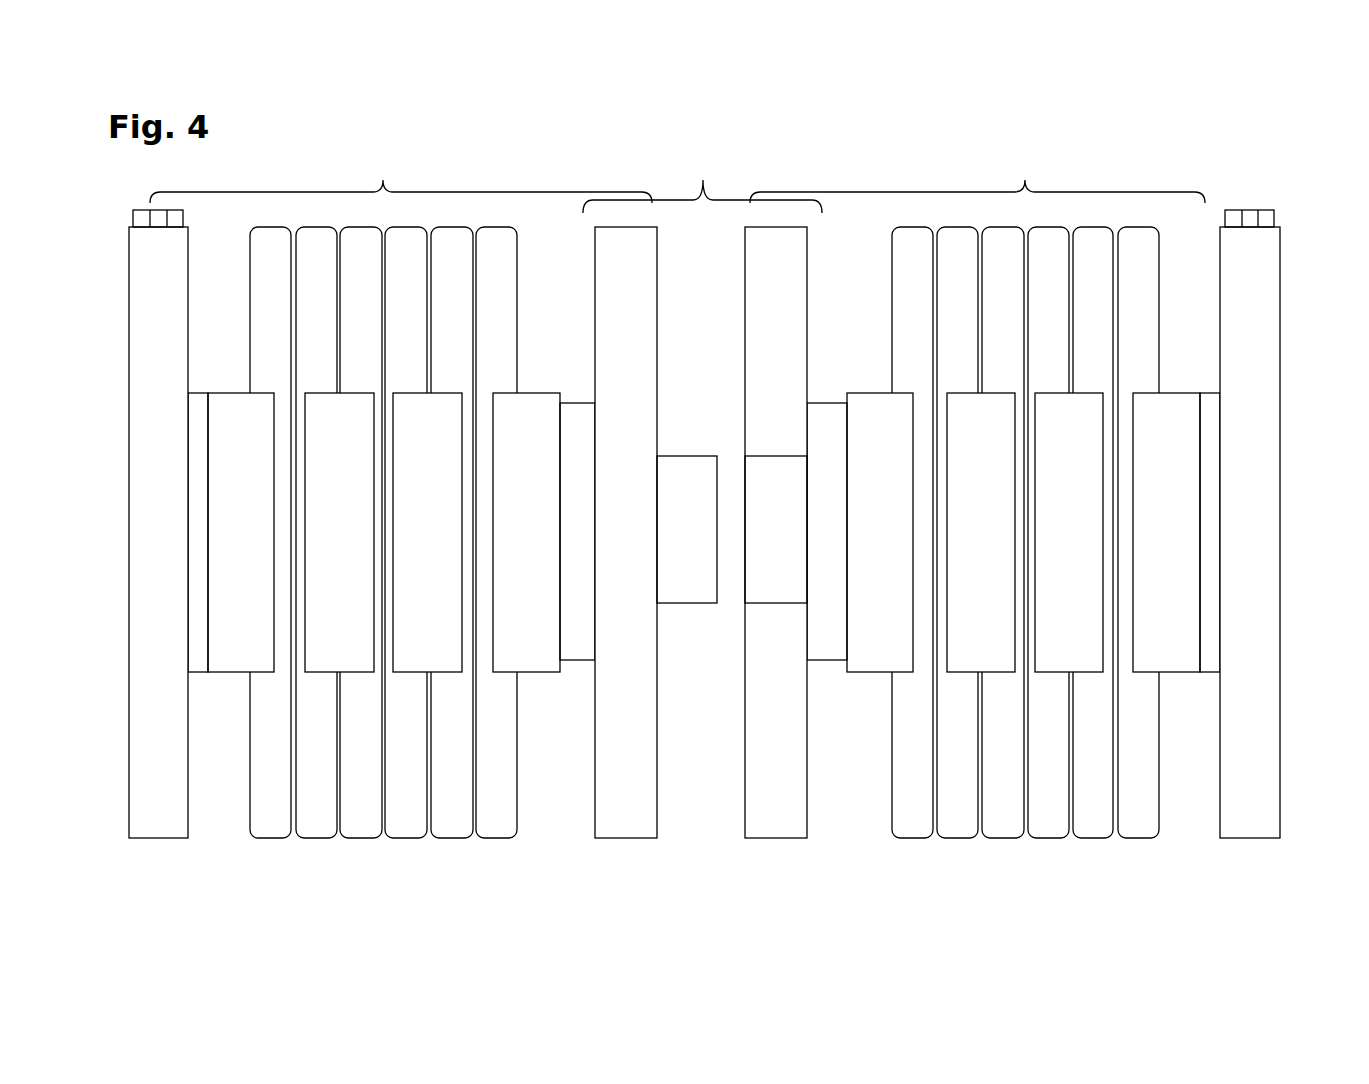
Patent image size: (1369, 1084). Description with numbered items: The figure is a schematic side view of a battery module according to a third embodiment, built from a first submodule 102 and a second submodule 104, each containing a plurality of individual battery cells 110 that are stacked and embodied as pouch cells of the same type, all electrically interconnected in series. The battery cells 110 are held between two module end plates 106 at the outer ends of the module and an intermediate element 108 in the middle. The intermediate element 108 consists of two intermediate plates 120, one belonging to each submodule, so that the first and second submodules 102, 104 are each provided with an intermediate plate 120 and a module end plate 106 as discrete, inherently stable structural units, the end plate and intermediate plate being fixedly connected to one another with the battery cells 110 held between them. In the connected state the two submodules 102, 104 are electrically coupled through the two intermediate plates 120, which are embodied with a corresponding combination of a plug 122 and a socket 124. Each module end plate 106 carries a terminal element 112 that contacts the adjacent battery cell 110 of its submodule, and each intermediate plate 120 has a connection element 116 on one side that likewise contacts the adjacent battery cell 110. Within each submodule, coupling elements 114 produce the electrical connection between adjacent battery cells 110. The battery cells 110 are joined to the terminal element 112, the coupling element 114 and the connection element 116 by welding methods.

The first submodule 102 is at (401, 174).
The second submodule 104 is at (977, 174).
The intermediate element 108 is at (702, 179).
The module end plate 106 is at (148, 253).
The battery cell 110 is at (270, 815).
The terminal element 112 is at (194, 520).
The coupling element 114 is at (418, 660).
The connection element 116 is at (577, 655).
The intermediate plate 120 is at (625, 810).
The plug 122 is at (678, 592).
The socket 124 is at (777, 590).